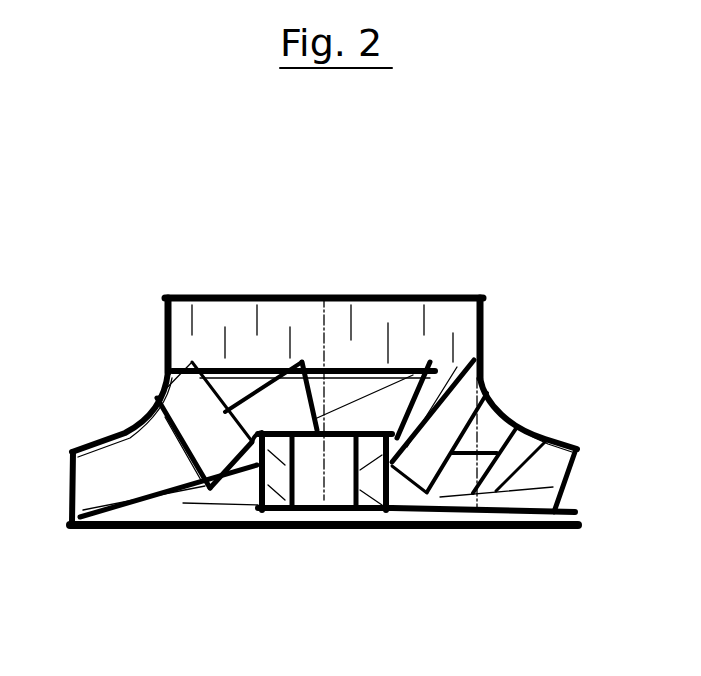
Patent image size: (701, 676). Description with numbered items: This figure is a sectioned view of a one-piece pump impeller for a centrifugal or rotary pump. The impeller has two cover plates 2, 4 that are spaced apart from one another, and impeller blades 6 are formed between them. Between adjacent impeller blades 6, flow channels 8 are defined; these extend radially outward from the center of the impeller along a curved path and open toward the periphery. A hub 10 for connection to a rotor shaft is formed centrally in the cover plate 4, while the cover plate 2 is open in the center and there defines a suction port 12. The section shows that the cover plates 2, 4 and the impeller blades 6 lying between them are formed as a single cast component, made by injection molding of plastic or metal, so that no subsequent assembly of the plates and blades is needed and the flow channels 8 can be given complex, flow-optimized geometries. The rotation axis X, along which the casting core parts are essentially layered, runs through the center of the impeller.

The cover plate 2 is at (122, 425).
The cover plate 4 is at (497, 513).
The impeller blades 6 is at (185, 468).
The flow channels 8 is at (117, 502).
The hub 10 is at (368, 498).
The suction port 12 is at (456, 315).
The axial direction X is at (382, 297).